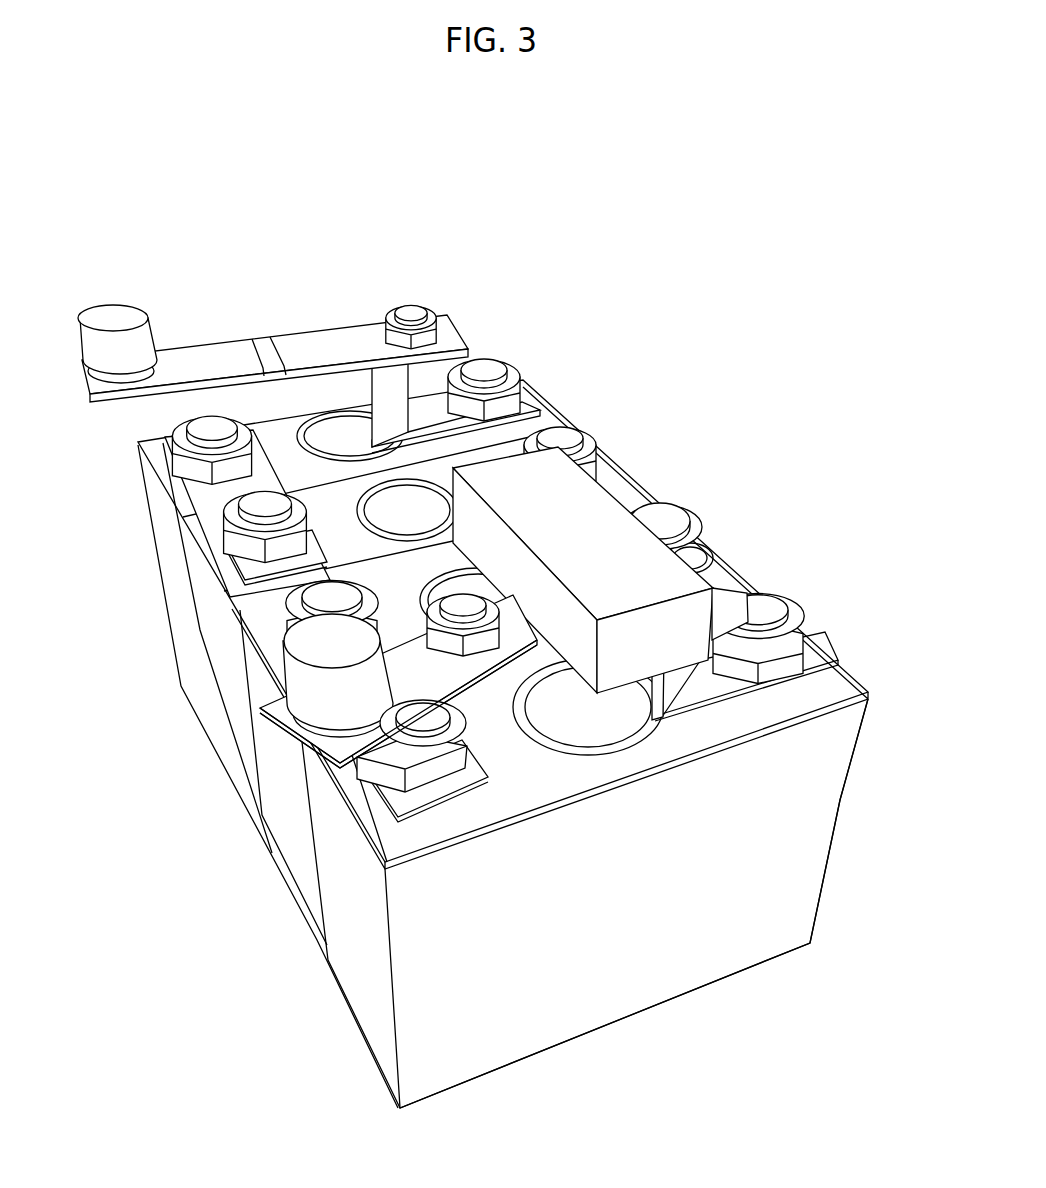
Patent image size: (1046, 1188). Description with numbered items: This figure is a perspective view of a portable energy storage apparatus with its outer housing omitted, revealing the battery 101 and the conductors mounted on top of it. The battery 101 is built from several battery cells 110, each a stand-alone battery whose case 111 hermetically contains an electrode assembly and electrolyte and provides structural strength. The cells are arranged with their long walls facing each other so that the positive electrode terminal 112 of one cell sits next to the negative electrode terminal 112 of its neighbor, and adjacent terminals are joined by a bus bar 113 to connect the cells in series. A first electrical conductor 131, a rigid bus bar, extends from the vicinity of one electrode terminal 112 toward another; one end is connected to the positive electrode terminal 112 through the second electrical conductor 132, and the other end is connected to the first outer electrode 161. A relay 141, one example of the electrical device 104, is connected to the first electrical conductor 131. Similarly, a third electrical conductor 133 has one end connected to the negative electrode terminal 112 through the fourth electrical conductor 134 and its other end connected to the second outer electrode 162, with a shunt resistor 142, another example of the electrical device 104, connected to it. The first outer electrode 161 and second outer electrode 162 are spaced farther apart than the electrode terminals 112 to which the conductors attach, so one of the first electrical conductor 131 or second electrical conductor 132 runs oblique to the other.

The battery 101 is at (762, 927).
The electrical device 104 is at (486, 472).
The battery cells 110 is at (372, 1033).
The case 111 is at (607, 1004).
The electrode terminals 112 is at (482, 367).
The bus bar 113 is at (165, 492).
The first electrical conductor 131 is at (472, 683).
The second electrical conductor 132 is at (718, 702).
The third electrical conductor 133 is at (363, 350).
The fourth electrical conductor 134 is at (396, 447).
The relay 141 is at (602, 535).
The shunt resistor 142 is at (267, 342).
The first outer electrode 161 is at (330, 695).
The second outer electrode 162 is at (102, 305).